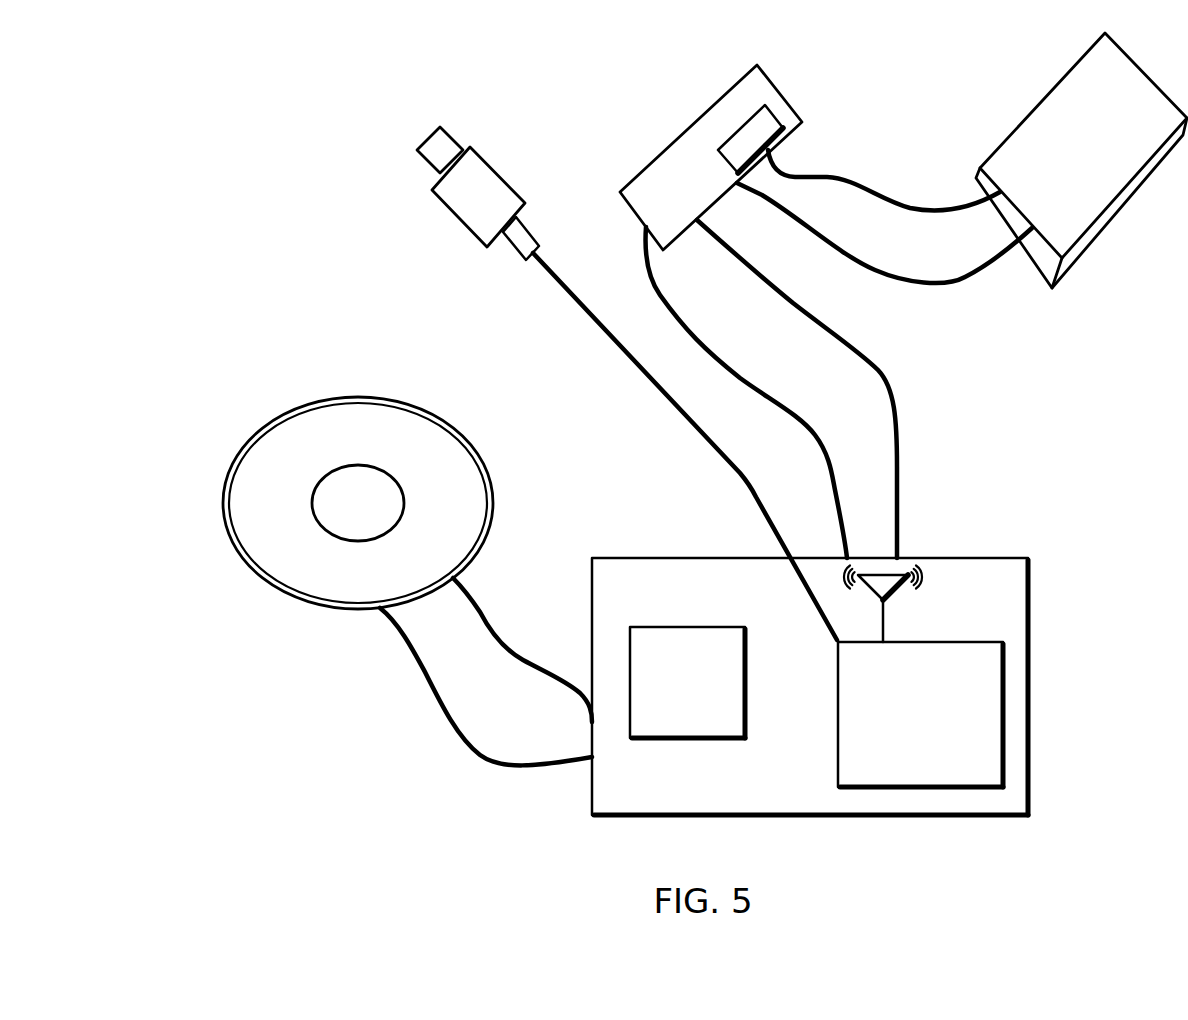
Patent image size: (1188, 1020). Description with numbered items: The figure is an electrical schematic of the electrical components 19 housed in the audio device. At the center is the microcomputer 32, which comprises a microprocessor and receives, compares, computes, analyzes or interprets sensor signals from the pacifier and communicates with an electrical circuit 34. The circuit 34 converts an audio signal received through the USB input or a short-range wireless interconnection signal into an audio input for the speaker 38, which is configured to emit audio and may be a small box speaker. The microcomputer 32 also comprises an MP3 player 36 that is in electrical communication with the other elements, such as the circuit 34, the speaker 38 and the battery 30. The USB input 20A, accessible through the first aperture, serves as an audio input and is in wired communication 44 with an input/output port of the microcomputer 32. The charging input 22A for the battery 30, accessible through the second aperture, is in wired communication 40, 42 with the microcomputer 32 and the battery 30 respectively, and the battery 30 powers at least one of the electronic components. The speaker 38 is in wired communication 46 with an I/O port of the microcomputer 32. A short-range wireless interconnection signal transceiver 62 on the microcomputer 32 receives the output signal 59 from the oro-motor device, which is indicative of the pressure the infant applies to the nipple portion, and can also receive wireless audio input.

The electrical components 19 is at (164, 100).
The USB input 20A is at (428, 143).
The charging input 22A is at (735, 130).
The battery 30 is at (1125, 210).
The microcomputer 32 is at (992, 530).
The electrical circuit 34 is at (836, 713).
The MP3 player 36 is at (687, 740).
The speaker 38 is at (223, 503).
The wired communication 40 is at (886, 180).
The wired communication 42 is at (909, 384).
The wired communication 44 is at (624, 392).
The wired communication 46 is at (507, 611).
The output signal 59 is at (924, 578).
The short-range wireless interconnection signal transceiver 62 is at (898, 590).